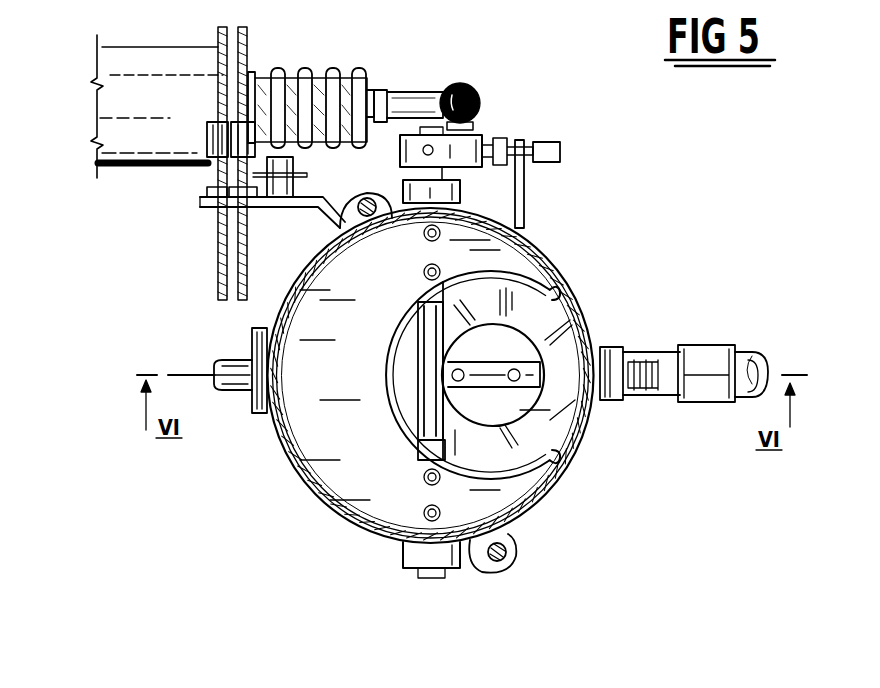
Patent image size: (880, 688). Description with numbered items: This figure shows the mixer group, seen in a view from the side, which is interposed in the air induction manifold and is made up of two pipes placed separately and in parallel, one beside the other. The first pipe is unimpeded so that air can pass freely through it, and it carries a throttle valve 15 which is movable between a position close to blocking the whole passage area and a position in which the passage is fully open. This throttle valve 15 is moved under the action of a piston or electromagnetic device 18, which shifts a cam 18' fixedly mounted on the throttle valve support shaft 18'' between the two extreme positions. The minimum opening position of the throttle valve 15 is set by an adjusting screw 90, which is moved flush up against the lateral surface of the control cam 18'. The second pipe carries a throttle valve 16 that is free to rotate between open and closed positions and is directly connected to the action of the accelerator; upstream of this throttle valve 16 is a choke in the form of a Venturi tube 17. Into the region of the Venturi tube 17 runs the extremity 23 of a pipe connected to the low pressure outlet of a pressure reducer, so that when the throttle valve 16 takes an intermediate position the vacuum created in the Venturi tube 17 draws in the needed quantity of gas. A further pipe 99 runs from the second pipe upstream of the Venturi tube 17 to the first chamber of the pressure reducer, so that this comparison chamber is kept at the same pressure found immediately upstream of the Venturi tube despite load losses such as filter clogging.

The throttle valve 15 is at (381, 462).
The throttle valve 16 is at (487, 342).
The Venturi tube 17 is at (555, 357).
The piston 18 is at (285, 163).
The cam 18' is at (466, 101).
The throttle valve support shaft 18'' is at (525, 182).
The adjusting screw 90 is at (545, 146).
The pipe 99 is at (607, 377).
The extremity of pipe 23 is at (657, 383).